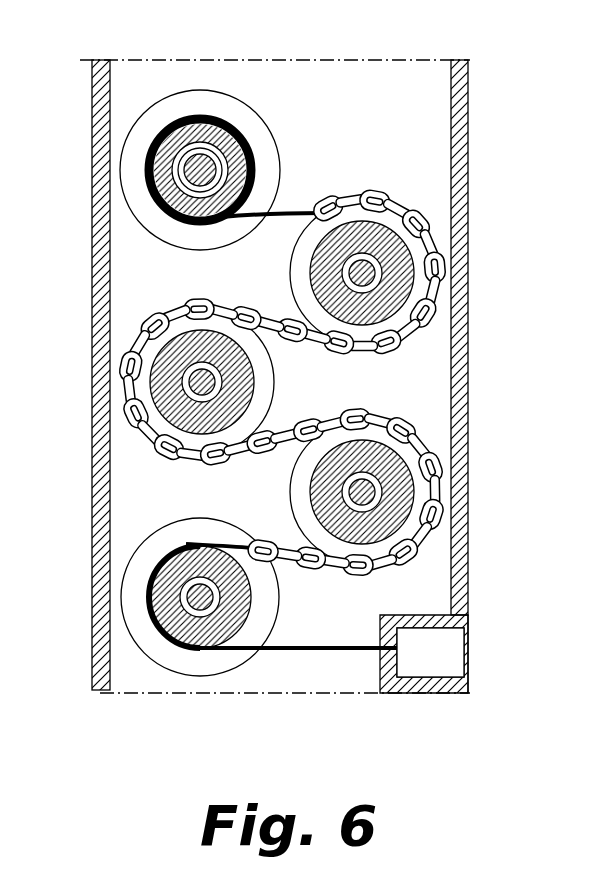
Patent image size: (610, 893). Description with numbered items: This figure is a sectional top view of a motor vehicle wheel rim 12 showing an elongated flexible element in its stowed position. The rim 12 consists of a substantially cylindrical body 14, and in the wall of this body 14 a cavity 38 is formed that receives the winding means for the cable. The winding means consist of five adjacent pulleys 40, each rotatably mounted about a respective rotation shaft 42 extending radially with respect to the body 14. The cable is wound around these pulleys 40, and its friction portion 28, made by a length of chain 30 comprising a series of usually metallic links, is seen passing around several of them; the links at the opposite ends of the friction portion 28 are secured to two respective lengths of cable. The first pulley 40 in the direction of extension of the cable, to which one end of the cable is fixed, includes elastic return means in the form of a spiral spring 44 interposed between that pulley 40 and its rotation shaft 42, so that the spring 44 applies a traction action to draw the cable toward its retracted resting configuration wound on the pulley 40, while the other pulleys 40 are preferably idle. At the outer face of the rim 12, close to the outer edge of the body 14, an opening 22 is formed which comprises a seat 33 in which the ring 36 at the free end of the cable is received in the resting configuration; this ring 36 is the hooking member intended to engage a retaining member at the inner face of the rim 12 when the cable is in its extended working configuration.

The rim 12 is at (92, 518).
The cylindrical body 14 is at (100, 262).
The opening 22 is at (468, 636).
The friction portion 28 is at (424, 341).
The chain 30 is at (442, 507).
The seat 33 is at (452, 665).
The ring 36 is at (456, 650).
The cavity 38 is at (450, 148).
The pulley 40 is at (252, 117).
The rotation shaft 42 is at (362, 273).
The spiral spring 44 is at (197, 160).